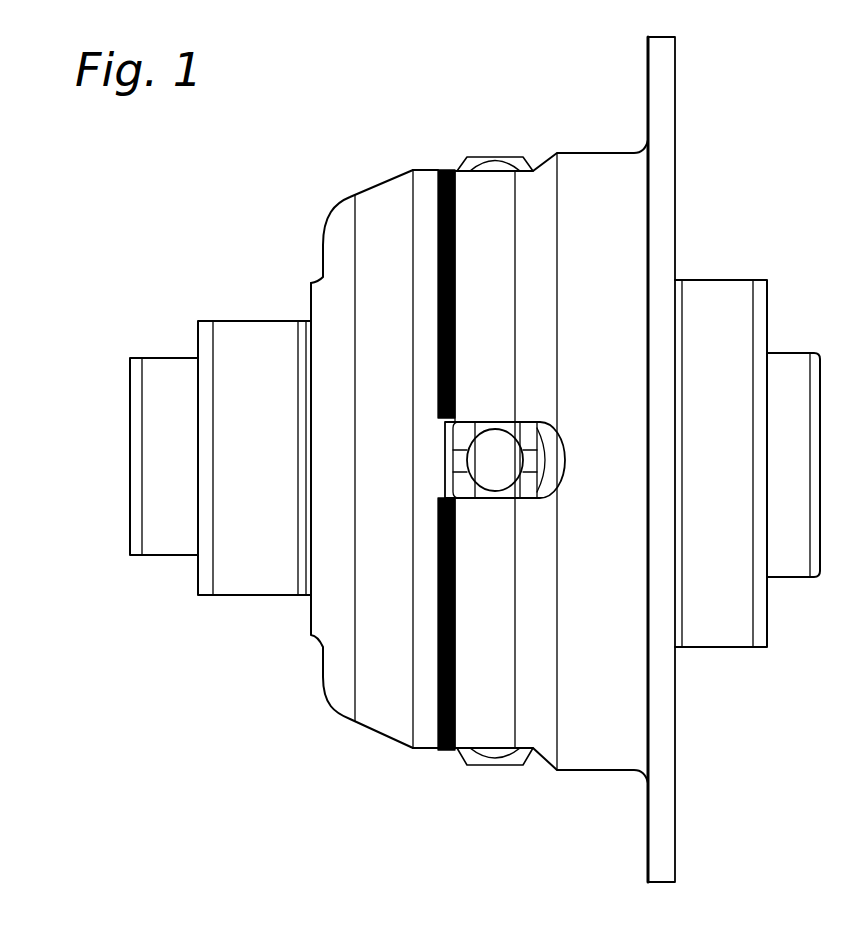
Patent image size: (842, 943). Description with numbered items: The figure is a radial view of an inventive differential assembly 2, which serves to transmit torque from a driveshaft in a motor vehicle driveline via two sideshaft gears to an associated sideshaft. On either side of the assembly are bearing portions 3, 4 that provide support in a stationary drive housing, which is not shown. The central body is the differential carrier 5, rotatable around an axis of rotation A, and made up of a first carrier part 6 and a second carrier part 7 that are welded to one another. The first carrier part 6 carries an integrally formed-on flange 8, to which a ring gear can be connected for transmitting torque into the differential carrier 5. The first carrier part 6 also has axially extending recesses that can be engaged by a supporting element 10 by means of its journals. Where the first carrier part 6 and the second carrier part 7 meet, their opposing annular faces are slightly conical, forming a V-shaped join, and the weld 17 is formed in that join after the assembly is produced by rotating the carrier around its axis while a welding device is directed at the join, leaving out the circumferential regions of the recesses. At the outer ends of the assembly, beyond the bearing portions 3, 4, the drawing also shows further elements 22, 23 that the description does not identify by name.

The differential assembly 2 is at (278, 153).
The bearing portion 3 is at (723, 290).
The bearing portion 4 is at (246, 328).
The differential carrier 5 is at (405, 170).
The first carrier part 6 is at (583, 166).
The second carrier part 7 is at (360, 200).
The flange 8 is at (667, 76).
The supporting element 10 is at (490, 156).
The weld 17 is at (457, 276).
The shaft stub 22 is at (785, 368).
The shaft stub 23 is at (163, 370).